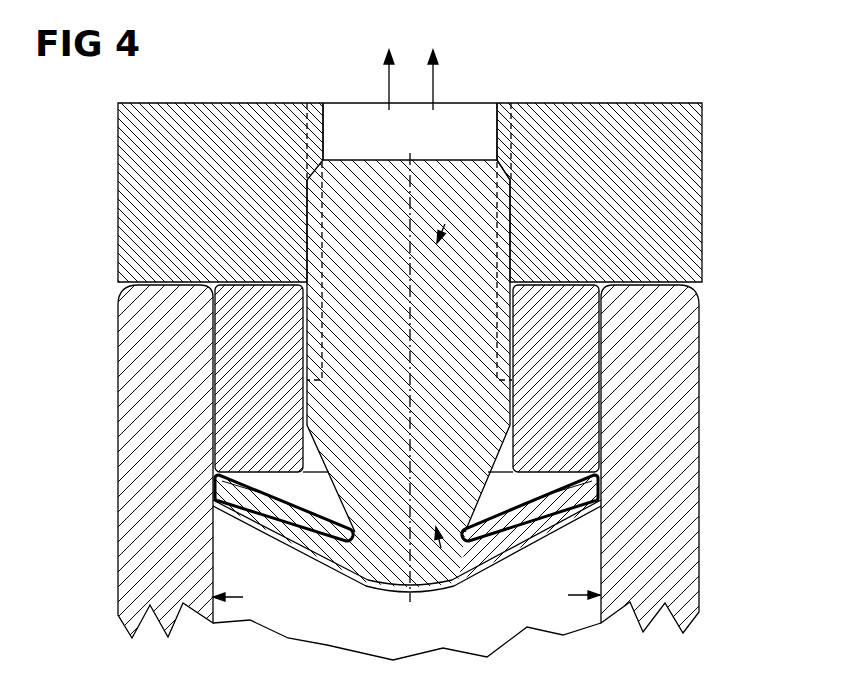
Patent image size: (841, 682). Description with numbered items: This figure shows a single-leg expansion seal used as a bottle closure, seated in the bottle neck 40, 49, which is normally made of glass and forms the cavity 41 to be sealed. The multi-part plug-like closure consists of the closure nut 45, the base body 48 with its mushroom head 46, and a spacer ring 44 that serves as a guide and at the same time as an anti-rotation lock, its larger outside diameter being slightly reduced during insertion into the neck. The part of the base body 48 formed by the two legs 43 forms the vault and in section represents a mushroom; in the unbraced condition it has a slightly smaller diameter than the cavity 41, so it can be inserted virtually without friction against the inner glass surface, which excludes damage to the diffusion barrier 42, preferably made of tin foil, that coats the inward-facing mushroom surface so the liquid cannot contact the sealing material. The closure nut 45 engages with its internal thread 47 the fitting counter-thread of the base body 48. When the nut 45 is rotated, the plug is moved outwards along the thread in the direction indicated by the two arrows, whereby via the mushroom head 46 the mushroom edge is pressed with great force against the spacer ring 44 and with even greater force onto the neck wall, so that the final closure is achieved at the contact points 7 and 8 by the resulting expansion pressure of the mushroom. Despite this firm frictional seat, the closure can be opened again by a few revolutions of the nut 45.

The contact point 7 is at (217, 488).
The contact point 8 is at (217, 470).
The bottle neck 40 is at (645, 413).
The cavity 41 is at (573, 523).
The diffusion barrier 42 is at (533, 540).
The legs 43 is at (575, 492).
The spacer ring 44 is at (562, 340).
The closure nut 45 is at (607, 242).
The mushroom head 46 is at (393, 543).
The internal thread 47 is at (507, 140).
The base body 48 is at (386, 230).
The bottle neck 49 is at (422, 598).